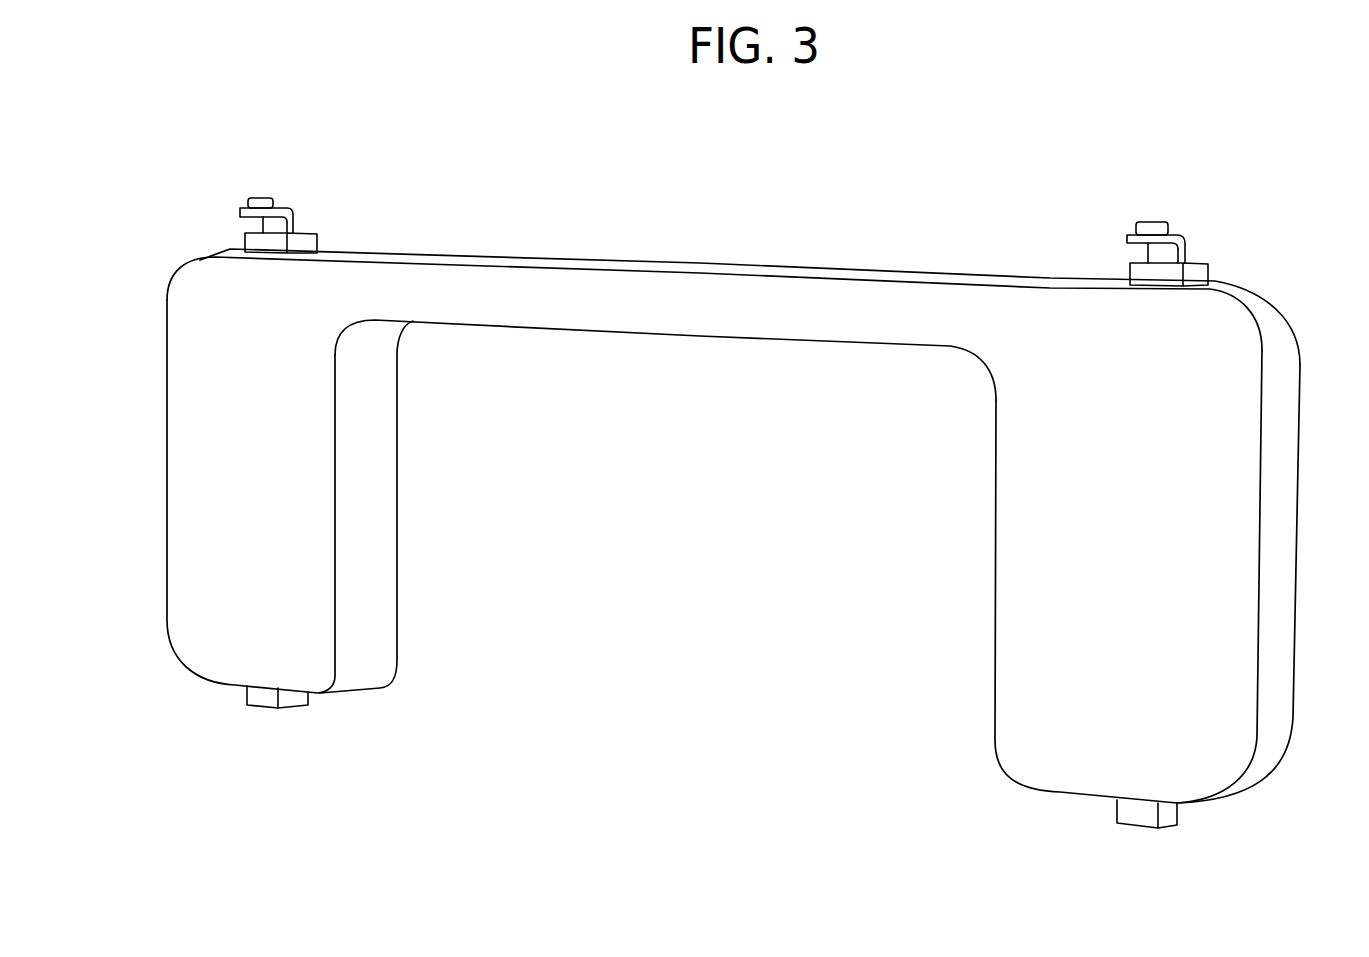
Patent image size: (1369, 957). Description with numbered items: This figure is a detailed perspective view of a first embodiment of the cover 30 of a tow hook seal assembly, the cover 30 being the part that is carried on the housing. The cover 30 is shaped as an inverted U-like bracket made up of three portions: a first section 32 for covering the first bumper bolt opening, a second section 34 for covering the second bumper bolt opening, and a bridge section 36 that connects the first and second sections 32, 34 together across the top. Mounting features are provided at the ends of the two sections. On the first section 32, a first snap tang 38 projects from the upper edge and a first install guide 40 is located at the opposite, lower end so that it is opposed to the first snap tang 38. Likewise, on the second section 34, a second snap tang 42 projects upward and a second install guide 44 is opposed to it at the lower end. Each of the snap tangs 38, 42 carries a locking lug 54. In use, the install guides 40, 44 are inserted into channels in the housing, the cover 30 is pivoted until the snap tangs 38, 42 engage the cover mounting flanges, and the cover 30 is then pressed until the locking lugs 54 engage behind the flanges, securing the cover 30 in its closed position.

The cover 30 is at (733, 471).
The first section 32 is at (370, 530).
The second section 34 is at (1057, 557).
The bridge section 36 is at (660, 302).
The first snap tang 38 is at (293, 215).
The first install guide 40 is at (262, 703).
The second snap tang 42 is at (1188, 248).
The second install guide 44 is at (1135, 822).
The locking lug 54 is at (257, 200).